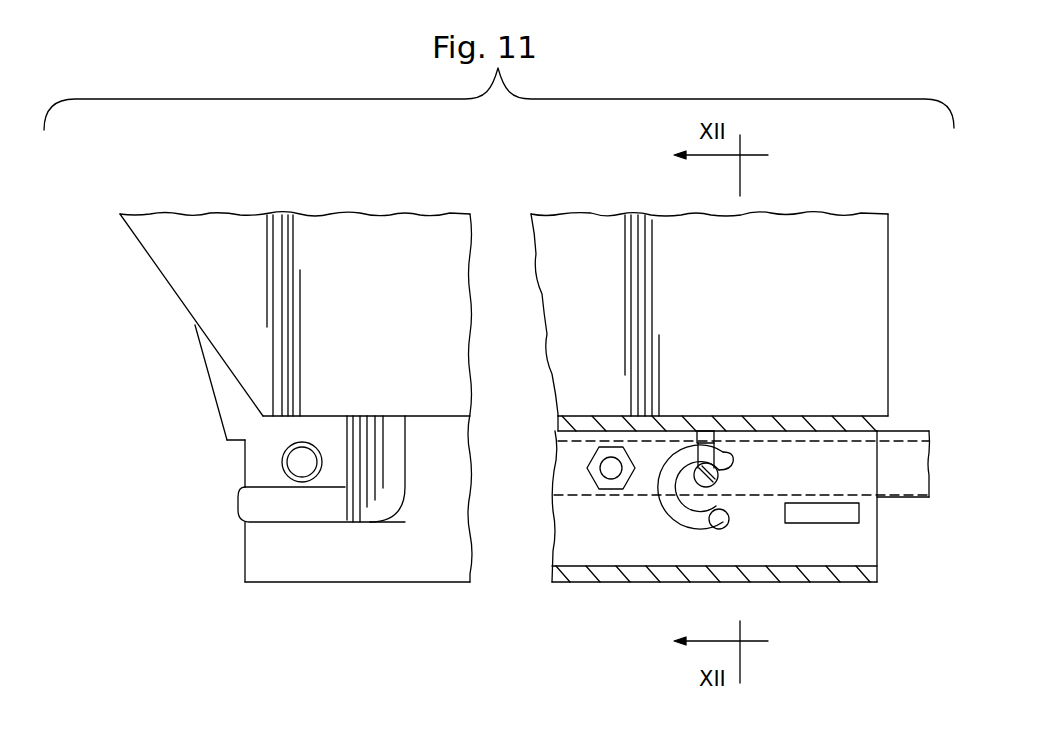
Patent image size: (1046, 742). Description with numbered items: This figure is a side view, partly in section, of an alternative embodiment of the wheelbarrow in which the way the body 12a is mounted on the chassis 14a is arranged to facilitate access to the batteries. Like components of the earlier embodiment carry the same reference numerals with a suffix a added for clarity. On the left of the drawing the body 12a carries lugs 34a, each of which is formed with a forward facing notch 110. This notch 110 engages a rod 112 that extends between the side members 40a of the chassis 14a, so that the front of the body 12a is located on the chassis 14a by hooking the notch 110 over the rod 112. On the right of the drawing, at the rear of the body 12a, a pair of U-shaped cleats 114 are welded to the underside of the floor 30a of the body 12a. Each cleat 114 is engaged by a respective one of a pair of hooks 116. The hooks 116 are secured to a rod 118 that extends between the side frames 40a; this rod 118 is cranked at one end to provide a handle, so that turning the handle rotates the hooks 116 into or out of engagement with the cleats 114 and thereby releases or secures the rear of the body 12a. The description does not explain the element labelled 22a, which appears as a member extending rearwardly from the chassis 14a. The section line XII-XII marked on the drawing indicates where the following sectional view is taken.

The body 12a is at (228, 291).
The chassis 14a is at (272, 556).
The forward facing notch 110 is at (267, 484).
The rod 112 is at (298, 459).
The lug 34a is at (343, 510).
The floor 30a is at (760, 415).
The side member 40a is at (580, 550).
The rail 22a is at (910, 489).
The U-shaped cleat 114 is at (718, 473).
The hook 116 is at (688, 508).
The rod 118 is at (724, 523).